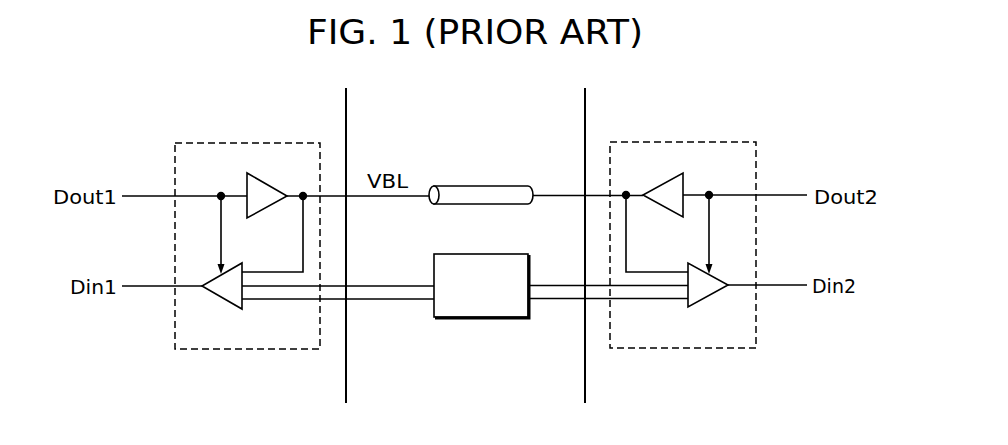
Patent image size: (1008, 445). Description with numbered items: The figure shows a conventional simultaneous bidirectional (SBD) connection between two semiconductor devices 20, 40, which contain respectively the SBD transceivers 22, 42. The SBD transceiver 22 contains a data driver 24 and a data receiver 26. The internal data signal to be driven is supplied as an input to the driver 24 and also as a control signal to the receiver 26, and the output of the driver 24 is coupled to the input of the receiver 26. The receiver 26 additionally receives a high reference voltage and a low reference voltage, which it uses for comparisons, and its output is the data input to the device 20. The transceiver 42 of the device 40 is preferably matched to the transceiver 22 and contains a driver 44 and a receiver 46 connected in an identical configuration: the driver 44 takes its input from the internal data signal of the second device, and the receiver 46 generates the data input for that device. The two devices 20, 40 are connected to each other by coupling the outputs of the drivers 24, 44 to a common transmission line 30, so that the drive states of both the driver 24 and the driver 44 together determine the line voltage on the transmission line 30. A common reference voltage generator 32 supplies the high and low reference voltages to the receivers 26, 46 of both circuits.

The semiconductor device 20 is at (326, 115).
The SBD transceiver 22 is at (226, 173).
The data driver 24 is at (266, 208).
The data receiver 26 is at (220, 300).
The transmission line 30 is at (483, 186).
The common reference voltage generator 32 is at (483, 254).
The semiconductor device 40 is at (635, 114).
The SBD transceiver 42 is at (732, 171).
The driver 44 is at (658, 210).
The receiver 46 is at (712, 297).